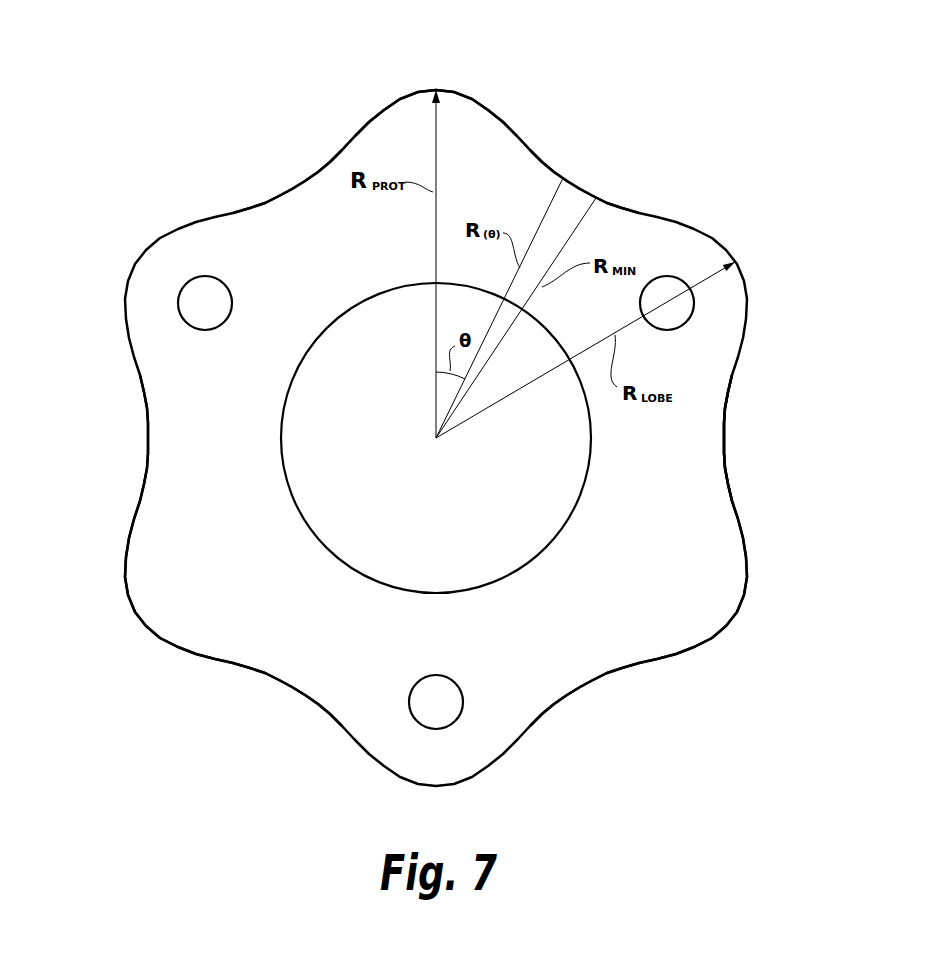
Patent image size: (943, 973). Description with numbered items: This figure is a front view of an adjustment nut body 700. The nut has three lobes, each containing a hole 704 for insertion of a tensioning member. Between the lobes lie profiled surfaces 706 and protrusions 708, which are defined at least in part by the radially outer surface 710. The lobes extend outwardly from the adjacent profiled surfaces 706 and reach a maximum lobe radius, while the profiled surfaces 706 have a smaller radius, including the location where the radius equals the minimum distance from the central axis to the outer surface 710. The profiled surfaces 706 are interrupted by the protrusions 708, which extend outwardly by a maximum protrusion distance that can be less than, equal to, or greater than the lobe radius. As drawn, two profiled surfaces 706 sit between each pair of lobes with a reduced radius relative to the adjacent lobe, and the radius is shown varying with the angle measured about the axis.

The adjustment nut body 700 is at (742, 200).
The hole 704 is at (183, 292).
The profiled surface 706 is at (282, 188).
The protrusion 708 is at (455, 90).
The radially outer surface 710 is at (725, 427).